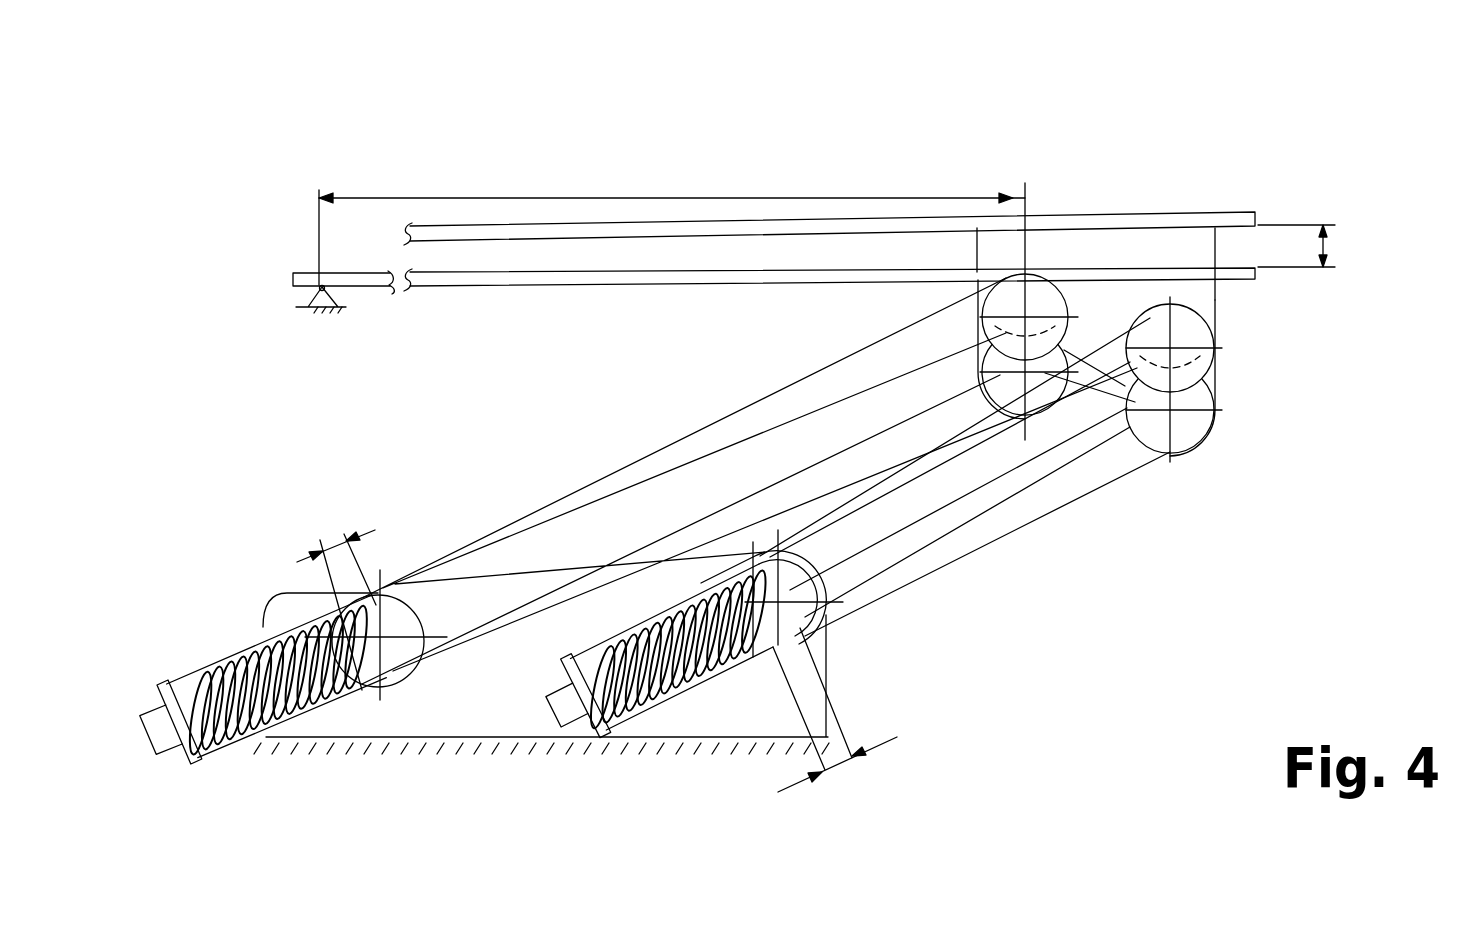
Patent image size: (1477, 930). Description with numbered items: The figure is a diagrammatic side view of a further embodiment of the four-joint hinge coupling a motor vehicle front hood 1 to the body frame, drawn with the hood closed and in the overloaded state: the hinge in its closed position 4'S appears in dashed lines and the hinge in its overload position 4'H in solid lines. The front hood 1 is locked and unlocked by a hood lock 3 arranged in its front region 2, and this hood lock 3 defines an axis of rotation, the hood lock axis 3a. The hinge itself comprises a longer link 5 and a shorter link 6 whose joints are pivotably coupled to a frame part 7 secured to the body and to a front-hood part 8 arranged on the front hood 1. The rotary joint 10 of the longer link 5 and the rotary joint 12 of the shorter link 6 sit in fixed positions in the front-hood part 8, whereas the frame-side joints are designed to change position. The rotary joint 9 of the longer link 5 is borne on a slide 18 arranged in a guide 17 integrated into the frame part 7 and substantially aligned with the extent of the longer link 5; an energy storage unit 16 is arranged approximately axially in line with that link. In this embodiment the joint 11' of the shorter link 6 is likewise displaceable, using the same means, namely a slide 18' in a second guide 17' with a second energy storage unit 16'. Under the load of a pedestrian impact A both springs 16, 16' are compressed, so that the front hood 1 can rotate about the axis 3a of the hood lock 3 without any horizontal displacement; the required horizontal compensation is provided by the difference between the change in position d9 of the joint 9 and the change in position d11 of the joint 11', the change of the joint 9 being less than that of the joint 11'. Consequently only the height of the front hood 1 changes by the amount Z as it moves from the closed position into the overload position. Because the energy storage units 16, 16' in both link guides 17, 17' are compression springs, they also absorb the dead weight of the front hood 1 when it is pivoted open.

The front hood 1 is at (777, 285).
The front region 2 is at (354, 272).
The hood lock 3 is at (312, 304).
The hood lock axis 3a is at (320, 287).
The four-joint hinge in closed position 4'S is at (672, 258).
The four-joint hinge in overload position 4'H is at (1159, 522).
The longer link 5 is at (665, 445).
The shorter link 6 is at (1023, 490).
The frame part 7 is at (503, 686).
The front-hood part 8 is at (1106, 318).
The rotary joint of longer link 9 is at (410, 670).
The rotary joint of longer link 10 is at (1042, 292).
The joint of shorter link 11' is at (818, 594).
The rotary joint of shorter link 12 is at (1215, 335).
The energy storage unit 16 is at (199, 773).
The energy storage unit 16' is at (600, 755).
The guide 17 is at (267, 663).
The guide 17' is at (667, 696).
The slide 18 is at (286, 712).
The slide 18' is at (783, 652).
The impact A is at (1093, 198).
The change in height Z is at (1296, 246).
The change in position of joint 9 d9 is at (357, 584).
The change in position of joint 11' d11 is at (835, 740).